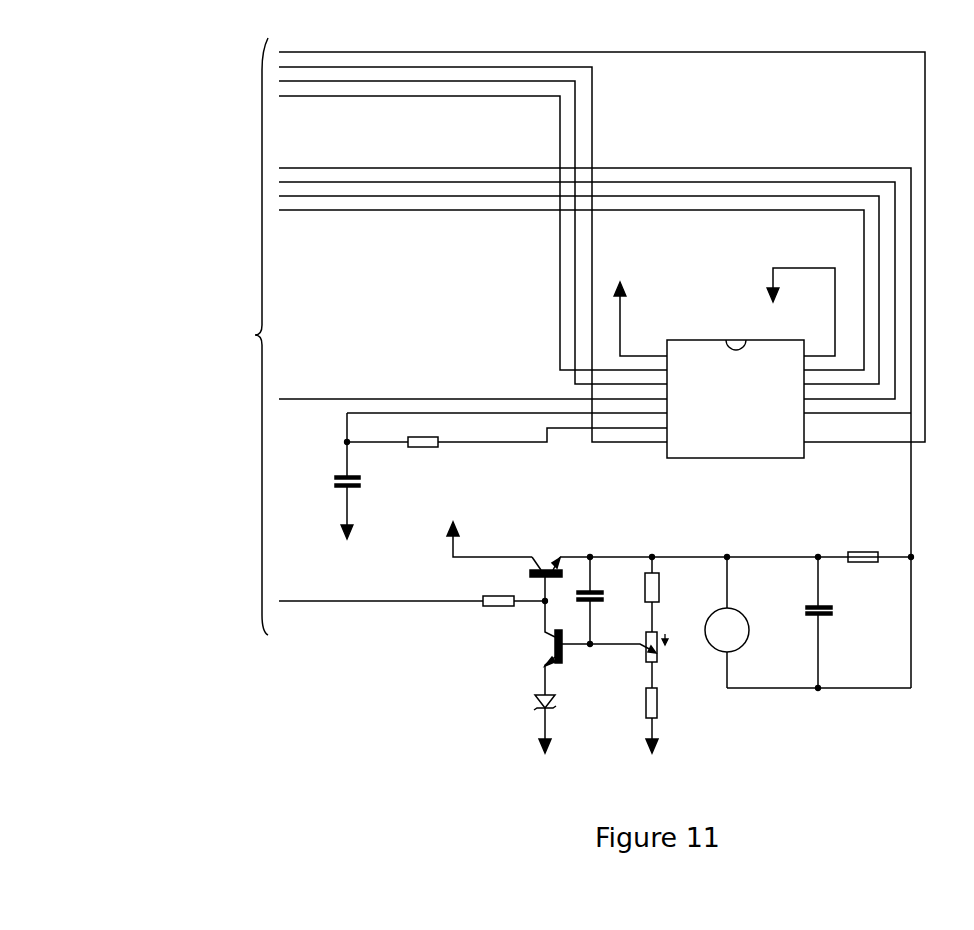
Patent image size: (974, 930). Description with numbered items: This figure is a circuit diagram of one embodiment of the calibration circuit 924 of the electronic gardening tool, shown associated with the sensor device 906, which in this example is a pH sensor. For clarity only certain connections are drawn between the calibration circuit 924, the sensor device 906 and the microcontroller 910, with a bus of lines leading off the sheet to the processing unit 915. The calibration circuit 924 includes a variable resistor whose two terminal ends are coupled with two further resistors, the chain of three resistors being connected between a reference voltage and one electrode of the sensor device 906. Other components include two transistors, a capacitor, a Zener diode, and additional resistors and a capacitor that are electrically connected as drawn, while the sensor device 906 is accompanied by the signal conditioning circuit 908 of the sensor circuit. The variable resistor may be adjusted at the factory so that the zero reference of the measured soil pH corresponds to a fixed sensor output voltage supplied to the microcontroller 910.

The processing unit 915 is at (218, 350).
The microcontroller 910 is at (733, 338).
The calibration circuit 924 is at (616, 537).
The signal conditioning circuit 908 is at (884, 594).
The sensor device 906 is at (748, 637).